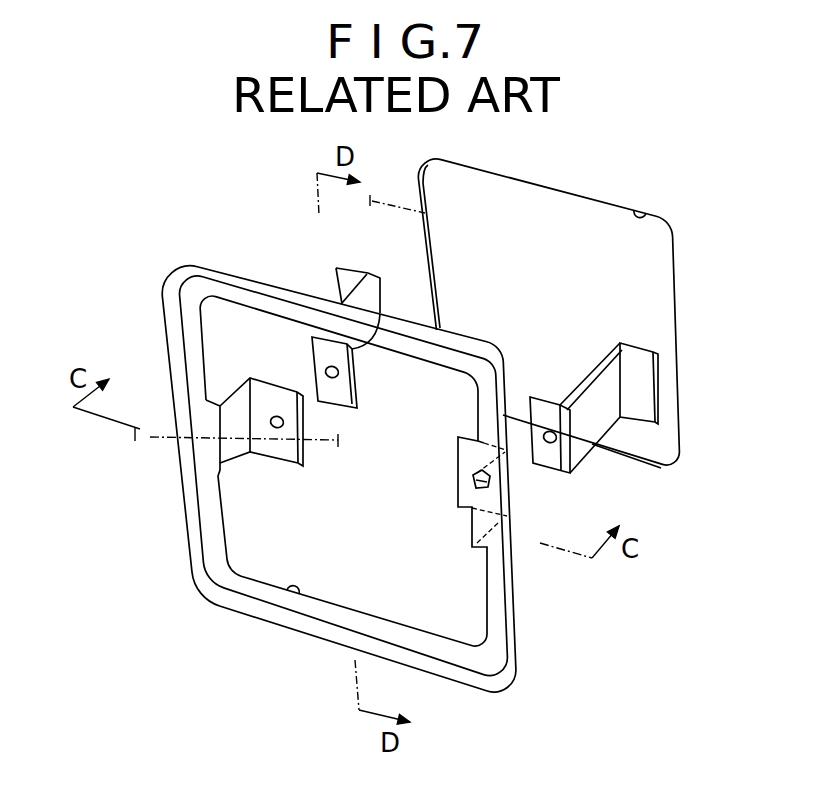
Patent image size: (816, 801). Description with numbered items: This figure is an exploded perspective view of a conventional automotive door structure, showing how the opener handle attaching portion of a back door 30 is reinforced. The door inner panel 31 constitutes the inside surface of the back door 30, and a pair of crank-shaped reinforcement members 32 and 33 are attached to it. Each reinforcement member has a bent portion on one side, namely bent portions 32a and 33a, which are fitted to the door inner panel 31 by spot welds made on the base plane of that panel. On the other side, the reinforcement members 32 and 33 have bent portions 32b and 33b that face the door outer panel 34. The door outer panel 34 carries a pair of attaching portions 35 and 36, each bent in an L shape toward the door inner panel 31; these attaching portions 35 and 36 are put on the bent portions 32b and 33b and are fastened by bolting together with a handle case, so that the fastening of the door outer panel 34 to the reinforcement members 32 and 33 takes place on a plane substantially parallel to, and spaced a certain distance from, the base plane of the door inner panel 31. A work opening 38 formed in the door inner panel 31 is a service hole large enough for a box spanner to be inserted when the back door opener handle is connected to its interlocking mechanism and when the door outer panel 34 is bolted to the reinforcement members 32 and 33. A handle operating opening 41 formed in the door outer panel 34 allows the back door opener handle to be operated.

The back door 30 is at (283, 205).
The door inner panel 31 is at (562, 312).
The reinforcement member 32 is at (353, 326).
The bent portion 32a is at (347, 280).
The bent portion 32b is at (347, 393).
The reinforcement member 33 is at (641, 416).
The bent portion 33a is at (640, 362).
The bent portion 33b is at (553, 457).
The door outer panel 34 is at (153, 522).
The attaching portion 35 is at (278, 453).
The attaching portion 36 is at (463, 483).
The work opening 38 is at (643, 213).
The handle operating opening 41 is at (296, 600).